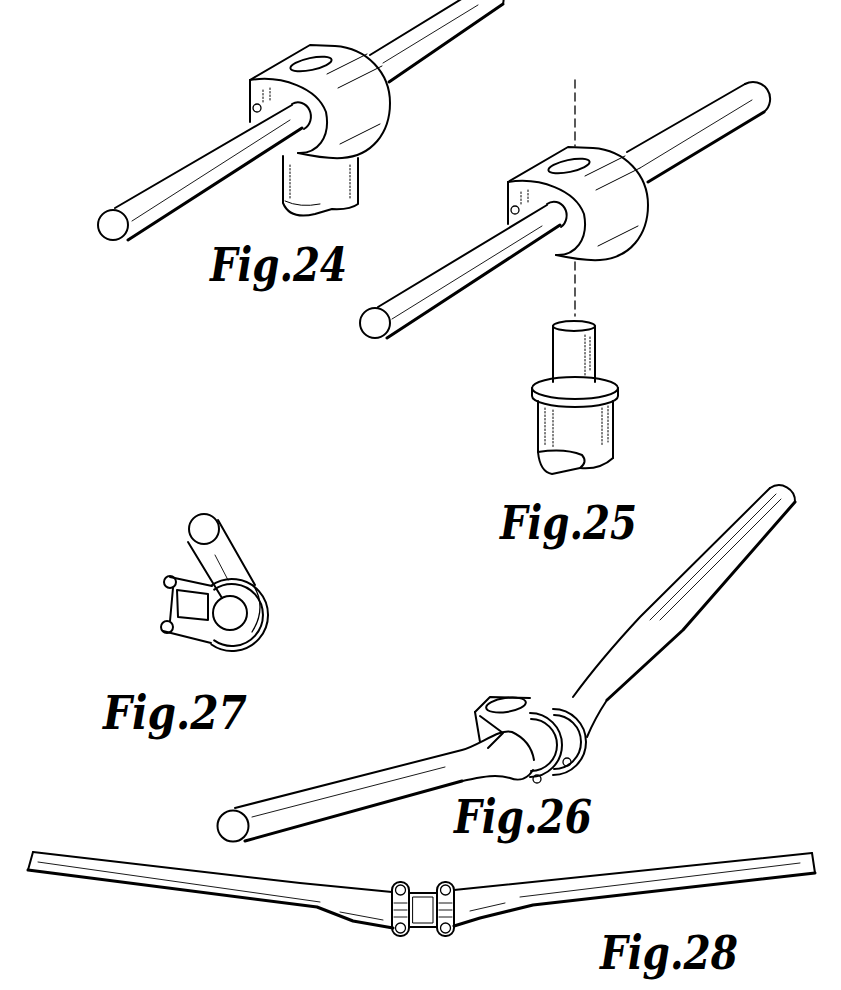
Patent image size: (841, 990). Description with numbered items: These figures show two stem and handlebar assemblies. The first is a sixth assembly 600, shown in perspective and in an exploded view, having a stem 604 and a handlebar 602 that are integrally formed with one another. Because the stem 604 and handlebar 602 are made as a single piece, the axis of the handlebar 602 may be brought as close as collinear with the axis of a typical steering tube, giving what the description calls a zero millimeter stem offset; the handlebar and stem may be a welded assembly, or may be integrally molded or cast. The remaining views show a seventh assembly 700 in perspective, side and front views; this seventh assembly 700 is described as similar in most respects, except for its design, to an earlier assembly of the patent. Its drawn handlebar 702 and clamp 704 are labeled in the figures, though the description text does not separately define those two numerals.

In FIG. 24, the sixth assembly 600 is at (262, 62).
In FIG. 25, the sixth assembly 600 is at (600, 353).
In FIG. 24, the handlebar 602 is at (437, 60).
In FIG. 25, the handlebar 602 is at (694, 160).
In FIG. 24, the stem 604 is at (385, 127).
In FIG. 25, the stem 604 is at (650, 228).
In FIG. 27, the seventh assembly 700 is at (176, 545).
In FIG. 26, the seventh assembly 700 is at (466, 691).
In FIG. 28, the seventh assembly 700 is at (343, 873).
In FIG. 27, the handlebar 702 is at (237, 553).
In FIG. 26, the handlebar 702 is at (703, 613).
In FIG. 28, the handlebar 702 is at (635, 869).
In FIG. 27, the clamp 704 is at (233, 652).
In FIG. 26, the clamp 704 is at (577, 758).
In FIG. 28, the clamp 704 is at (397, 935).